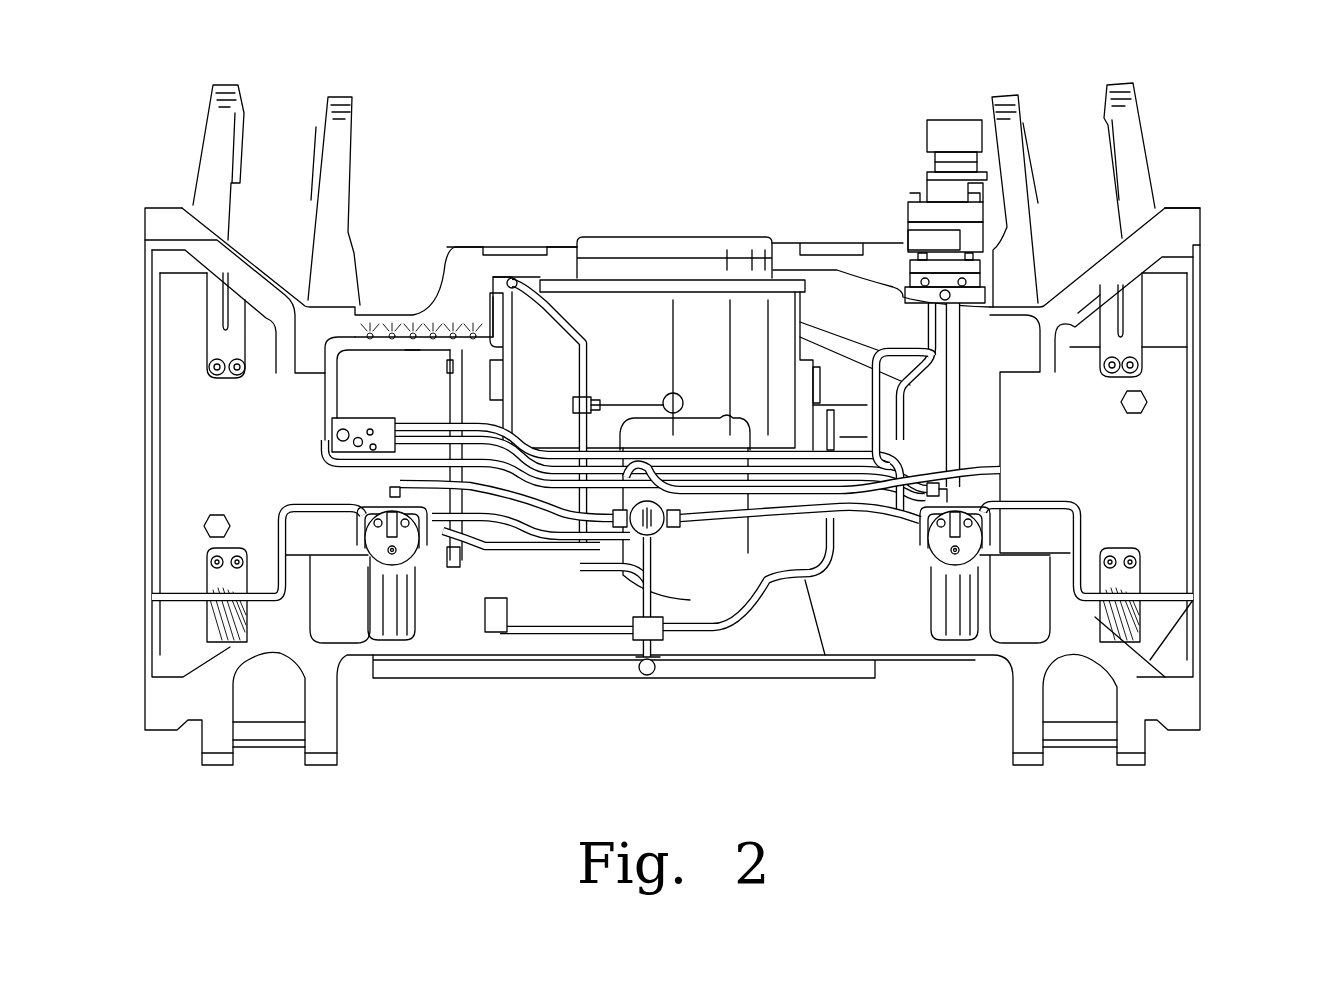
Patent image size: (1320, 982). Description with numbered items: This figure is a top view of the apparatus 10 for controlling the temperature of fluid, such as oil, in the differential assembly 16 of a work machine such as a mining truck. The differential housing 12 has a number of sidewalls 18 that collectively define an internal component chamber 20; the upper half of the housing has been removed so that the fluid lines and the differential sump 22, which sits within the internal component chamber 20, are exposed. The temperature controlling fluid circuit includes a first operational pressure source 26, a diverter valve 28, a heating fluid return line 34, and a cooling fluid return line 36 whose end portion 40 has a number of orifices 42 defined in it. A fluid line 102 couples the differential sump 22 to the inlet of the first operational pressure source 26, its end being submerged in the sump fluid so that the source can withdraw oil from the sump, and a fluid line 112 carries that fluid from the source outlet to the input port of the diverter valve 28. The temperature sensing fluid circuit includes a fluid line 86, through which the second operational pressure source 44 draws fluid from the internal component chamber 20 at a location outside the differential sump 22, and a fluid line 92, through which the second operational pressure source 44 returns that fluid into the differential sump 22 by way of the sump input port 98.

The apparatus 10 is at (1232, 128).
The differential housing 12 is at (788, 220).
The differential assembly 16 is at (907, 712).
The sidewalls 18 is at (374, 312).
The internal component chamber 20 is at (413, 334).
The differential sump 22 is at (735, 425).
The first operational pressure source 26 is at (910, 205).
The diverter valve 28 is at (385, 430).
The heating fluid return line 34 is at (645, 470).
The cooling fluid return line 36 is at (333, 350).
The end portion 40 is at (473, 334).
The orifices 42 is at (415, 338).
The second operational pressure source 44 is at (910, 236).
The fluid line 86 is at (850, 440).
The fluid line 92 is at (927, 333).
The sump input port 98 is at (660, 657).
The fluid line 102 is at (822, 345).
The fluid line 112 is at (515, 447).